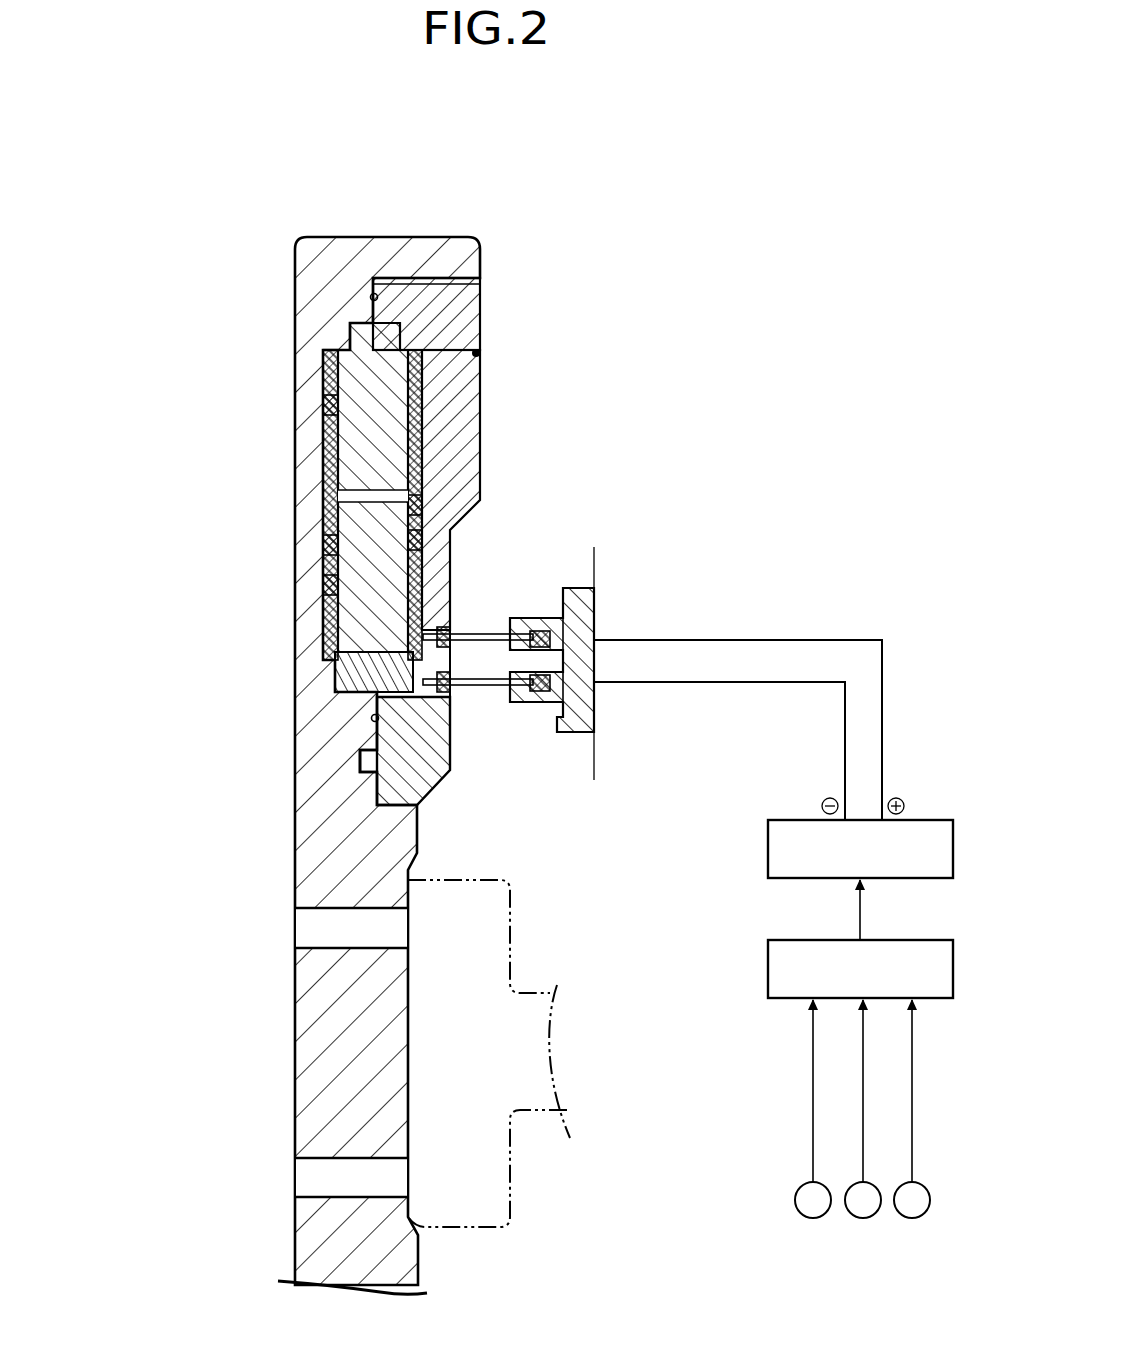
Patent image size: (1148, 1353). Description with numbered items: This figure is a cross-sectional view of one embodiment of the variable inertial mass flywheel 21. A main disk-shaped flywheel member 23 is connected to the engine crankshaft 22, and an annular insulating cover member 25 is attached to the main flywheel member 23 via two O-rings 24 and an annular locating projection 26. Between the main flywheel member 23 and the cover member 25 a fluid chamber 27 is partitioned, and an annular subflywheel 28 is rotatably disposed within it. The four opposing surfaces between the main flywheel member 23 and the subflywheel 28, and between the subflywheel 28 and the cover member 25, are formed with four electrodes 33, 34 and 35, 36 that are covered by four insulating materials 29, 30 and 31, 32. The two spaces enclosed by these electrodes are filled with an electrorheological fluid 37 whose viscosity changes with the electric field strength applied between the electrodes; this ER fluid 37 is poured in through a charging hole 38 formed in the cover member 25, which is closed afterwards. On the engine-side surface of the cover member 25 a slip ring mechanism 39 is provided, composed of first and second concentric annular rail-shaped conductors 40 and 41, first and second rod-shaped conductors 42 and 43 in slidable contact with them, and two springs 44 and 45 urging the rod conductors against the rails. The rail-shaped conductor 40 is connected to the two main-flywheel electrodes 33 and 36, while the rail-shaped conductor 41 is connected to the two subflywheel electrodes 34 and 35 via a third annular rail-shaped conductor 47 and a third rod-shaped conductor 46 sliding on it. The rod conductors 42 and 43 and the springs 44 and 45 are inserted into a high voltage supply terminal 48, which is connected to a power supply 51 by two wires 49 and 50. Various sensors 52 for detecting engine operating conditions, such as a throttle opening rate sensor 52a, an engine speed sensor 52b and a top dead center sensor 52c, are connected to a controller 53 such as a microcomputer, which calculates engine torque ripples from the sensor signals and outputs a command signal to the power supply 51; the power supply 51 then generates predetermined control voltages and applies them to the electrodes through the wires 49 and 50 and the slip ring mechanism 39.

The variable inertial mass flywheel 21 is at (628, 233).
The engine crankshaft 22 is at (505, 1210).
The main disk-shaped flywheel member 23 is at (298, 823).
The O-rings 24 is at (373, 300).
The annular insulating cover member 25 is at (470, 447).
The annular locating projection 26 is at (375, 767).
The fluid chamber 27 is at (325, 350).
The annular subflywheel 28 is at (370, 450).
The insulating material 29 is at (325, 405).
The insulating material 30 is at (325, 585).
The insulating material 31 is at (423, 540).
The insulating material 32 is at (423, 405).
The main-flywheel electrode 33 is at (325, 368).
The subflywheel electrode 34 is at (325, 545).
The subflywheel electrode 35 is at (420, 510).
The main-flywheel electrode 36 is at (480, 353).
The electrorheological fluid 37 is at (465, 340).
The charging hole 38 is at (481, 272).
The slip ring mechanism 39 is at (455, 700).
The first annular rail-shaped conductor 40 is at (445, 625).
The second annular rail-shaped conductor 41 is at (448, 700).
The first rod-shaped conductor 42 is at (487, 633).
The second rod-shaped conductor 43 is at (483, 688).
The spring 44 is at (531, 628).
The spring 45 is at (534, 700).
The third rod-shaped conductor 46 is at (413, 715).
The third annular rail-shaped conductor 47 is at (340, 668).
The high voltage supply terminal 48 is at (580, 605).
The wire 49 is at (752, 638).
The wire 50 is at (738, 685).
The power supply 51 is at (768, 858).
The sensors 52 is at (836, 1132).
The throttle opening rate sensor 52a is at (800, 1215).
The engine speed sensor 52b is at (855, 1215).
The top dead center sensor 52c is at (907, 1213).
The controller 53 is at (768, 972).